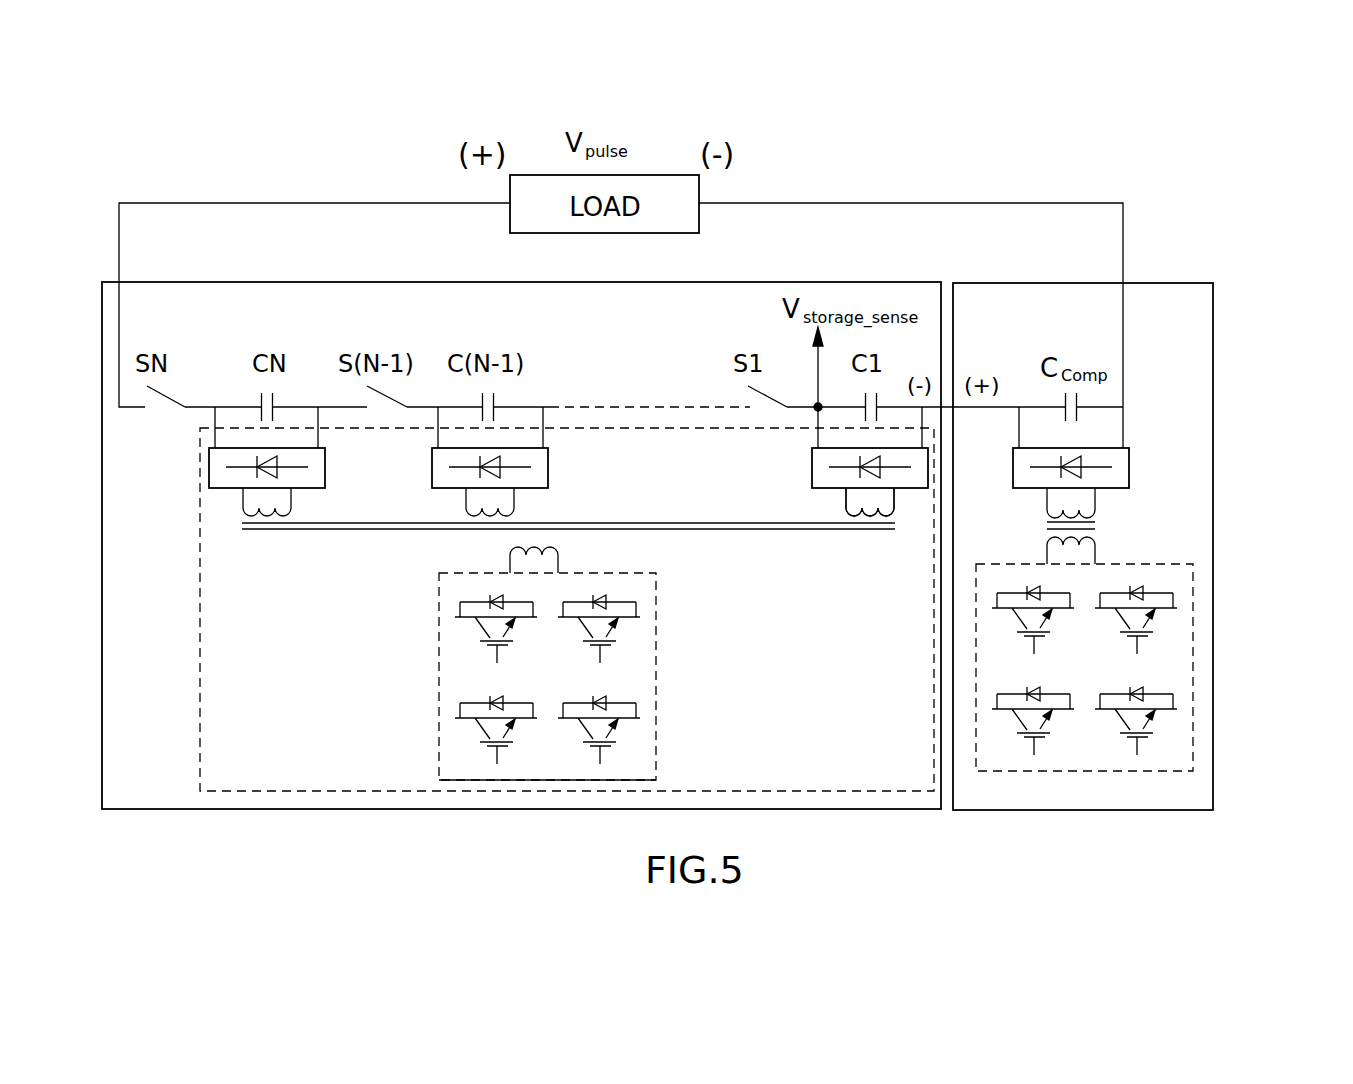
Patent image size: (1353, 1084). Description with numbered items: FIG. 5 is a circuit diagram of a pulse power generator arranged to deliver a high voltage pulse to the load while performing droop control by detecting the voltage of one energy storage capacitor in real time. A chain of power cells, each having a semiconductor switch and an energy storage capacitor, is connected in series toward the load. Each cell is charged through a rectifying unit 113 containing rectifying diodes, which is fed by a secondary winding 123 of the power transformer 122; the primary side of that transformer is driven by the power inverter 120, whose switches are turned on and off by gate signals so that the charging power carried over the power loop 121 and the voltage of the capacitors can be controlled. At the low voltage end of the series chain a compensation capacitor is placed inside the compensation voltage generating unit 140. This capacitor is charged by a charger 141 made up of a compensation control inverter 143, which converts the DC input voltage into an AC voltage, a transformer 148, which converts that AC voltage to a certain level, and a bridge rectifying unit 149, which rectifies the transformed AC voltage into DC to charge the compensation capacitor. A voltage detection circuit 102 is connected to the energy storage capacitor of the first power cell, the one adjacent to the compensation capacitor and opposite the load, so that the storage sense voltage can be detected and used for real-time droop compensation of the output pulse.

The voltage detection circuit 102 is at (815, 358).
The rectifying unit 113 is at (812, 466).
The power inverter 120 is at (439, 668).
The power loop 121 is at (715, 530).
The power transformer 122 is at (839, 550).
The secondary winding 123 is at (895, 508).
The compensation voltage generating unit 140 is at (1170, 283).
The charger 141 is at (1184, 526).
The compensation control inverter 143 is at (1193, 663).
The transformer 148 is at (1112, 522).
The bridge rectifying unit 149 is at (1149, 468).